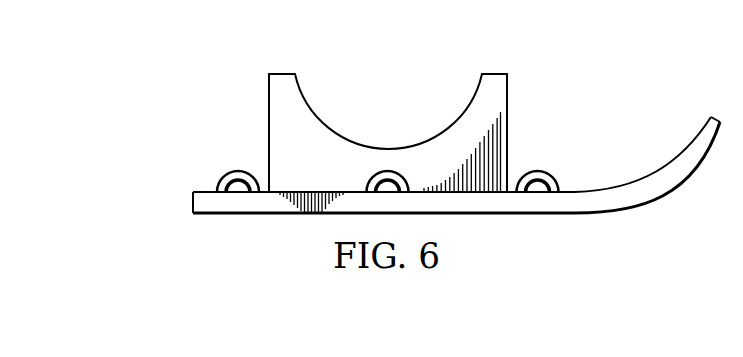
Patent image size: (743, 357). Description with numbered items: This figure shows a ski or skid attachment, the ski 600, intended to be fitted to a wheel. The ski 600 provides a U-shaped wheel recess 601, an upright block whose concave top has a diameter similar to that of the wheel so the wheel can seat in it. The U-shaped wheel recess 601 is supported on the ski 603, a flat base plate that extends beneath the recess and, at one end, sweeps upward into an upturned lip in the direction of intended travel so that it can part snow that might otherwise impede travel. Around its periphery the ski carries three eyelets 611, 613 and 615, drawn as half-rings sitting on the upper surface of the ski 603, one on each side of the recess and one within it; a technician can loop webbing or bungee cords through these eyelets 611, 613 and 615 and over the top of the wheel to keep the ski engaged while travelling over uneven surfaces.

The ski 600 is at (160, 112).
The U-shaped wheel recess 601 is at (508, 107).
The ski 603 is at (571, 214).
The eyelet 611 is at (537, 171).
The eyelet 613 is at (232, 171).
The eyelet 615 is at (370, 178).